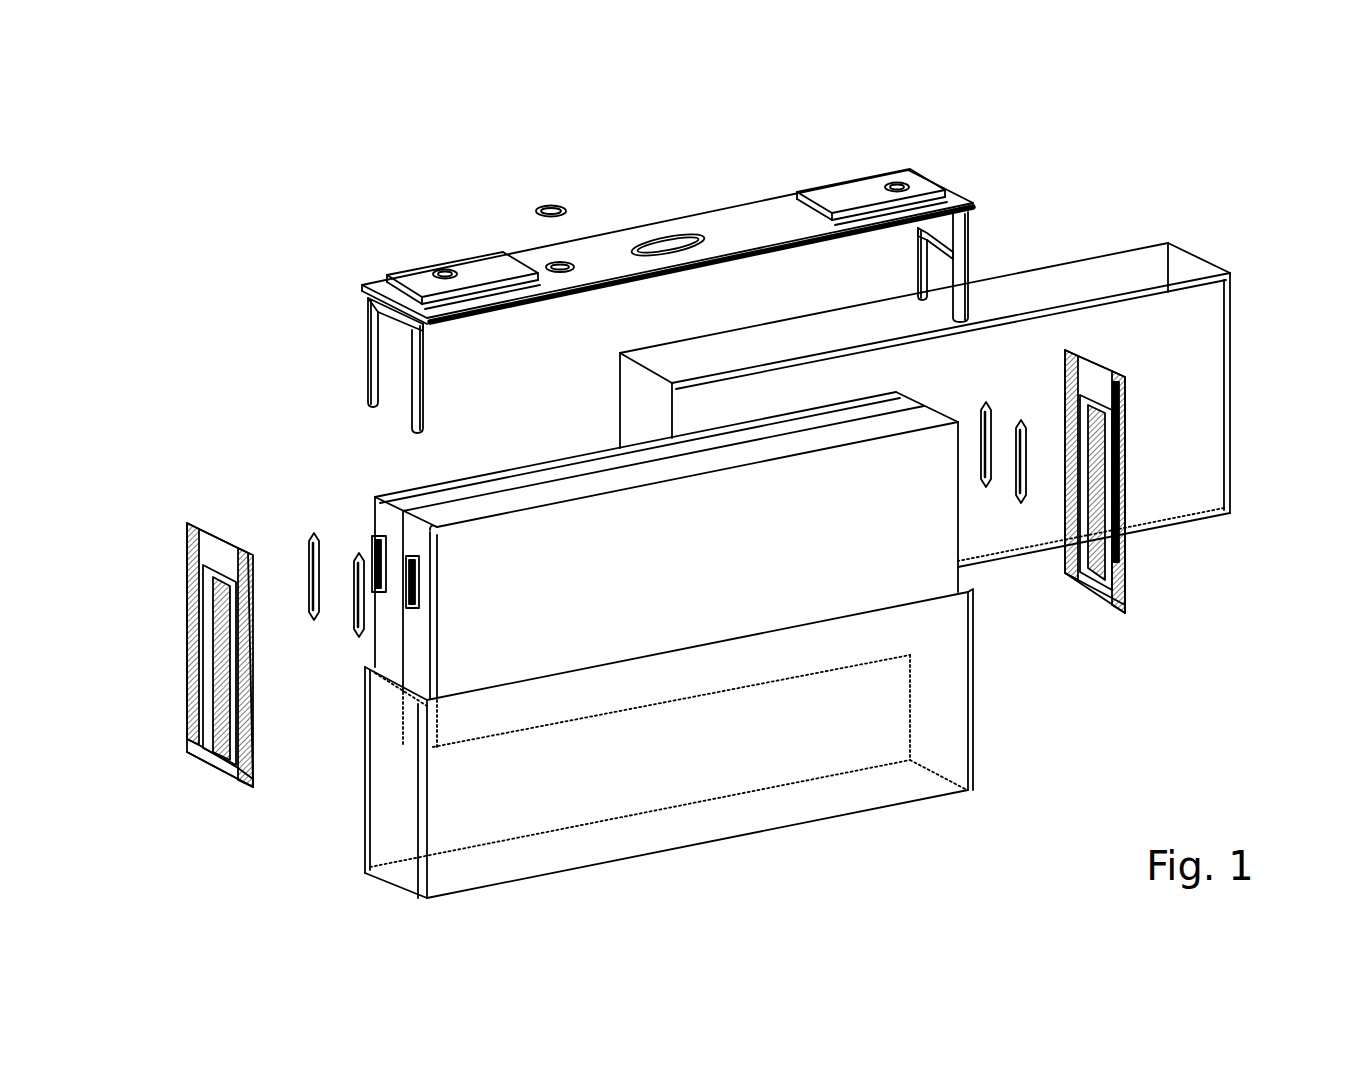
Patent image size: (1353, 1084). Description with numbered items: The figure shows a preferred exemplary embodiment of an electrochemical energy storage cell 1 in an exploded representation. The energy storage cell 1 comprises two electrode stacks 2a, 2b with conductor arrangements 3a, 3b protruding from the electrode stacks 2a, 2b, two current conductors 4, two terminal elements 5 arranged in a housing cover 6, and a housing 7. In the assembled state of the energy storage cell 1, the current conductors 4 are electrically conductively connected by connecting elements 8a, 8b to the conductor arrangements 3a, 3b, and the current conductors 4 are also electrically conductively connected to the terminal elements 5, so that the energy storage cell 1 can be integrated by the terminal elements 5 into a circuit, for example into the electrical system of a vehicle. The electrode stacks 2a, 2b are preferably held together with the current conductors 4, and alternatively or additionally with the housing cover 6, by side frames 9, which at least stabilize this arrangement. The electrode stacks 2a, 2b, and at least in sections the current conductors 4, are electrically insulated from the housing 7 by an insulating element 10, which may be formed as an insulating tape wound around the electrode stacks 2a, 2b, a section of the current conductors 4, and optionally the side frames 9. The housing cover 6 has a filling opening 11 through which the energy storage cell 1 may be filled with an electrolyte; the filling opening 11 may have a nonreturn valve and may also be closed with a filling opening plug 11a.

The electrochemical energy storage cell 1 is at (348, 225).
The electrode stack 2a is at (680, 584).
The electrode stack 2b is at (596, 447).
The conductor arrangement 3a is at (417, 578).
The conductor arrangement 3b is at (386, 572).
The current conductor 4 is at (367, 315).
The terminal element 5 is at (452, 258).
The housing cover 6 is at (723, 207).
The housing 7 is at (1230, 387).
The connecting element 8a is at (358, 553).
The connecting element 8b is at (313, 533).
The side frame 9 is at (187, 572).
The insulating element 10 is at (970, 752).
The filling opening 11 is at (558, 262).
The filling opening plug 11a is at (551, 205).